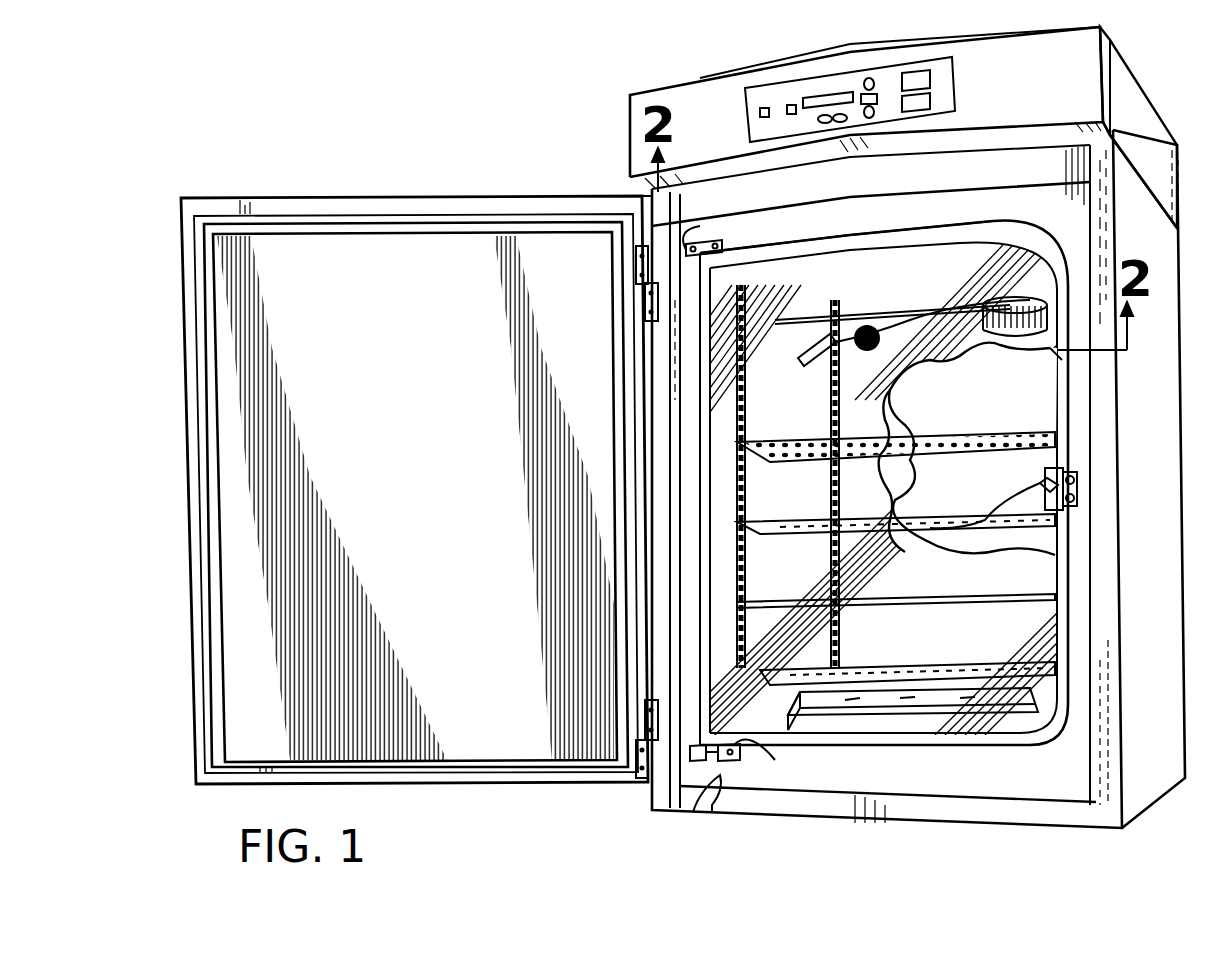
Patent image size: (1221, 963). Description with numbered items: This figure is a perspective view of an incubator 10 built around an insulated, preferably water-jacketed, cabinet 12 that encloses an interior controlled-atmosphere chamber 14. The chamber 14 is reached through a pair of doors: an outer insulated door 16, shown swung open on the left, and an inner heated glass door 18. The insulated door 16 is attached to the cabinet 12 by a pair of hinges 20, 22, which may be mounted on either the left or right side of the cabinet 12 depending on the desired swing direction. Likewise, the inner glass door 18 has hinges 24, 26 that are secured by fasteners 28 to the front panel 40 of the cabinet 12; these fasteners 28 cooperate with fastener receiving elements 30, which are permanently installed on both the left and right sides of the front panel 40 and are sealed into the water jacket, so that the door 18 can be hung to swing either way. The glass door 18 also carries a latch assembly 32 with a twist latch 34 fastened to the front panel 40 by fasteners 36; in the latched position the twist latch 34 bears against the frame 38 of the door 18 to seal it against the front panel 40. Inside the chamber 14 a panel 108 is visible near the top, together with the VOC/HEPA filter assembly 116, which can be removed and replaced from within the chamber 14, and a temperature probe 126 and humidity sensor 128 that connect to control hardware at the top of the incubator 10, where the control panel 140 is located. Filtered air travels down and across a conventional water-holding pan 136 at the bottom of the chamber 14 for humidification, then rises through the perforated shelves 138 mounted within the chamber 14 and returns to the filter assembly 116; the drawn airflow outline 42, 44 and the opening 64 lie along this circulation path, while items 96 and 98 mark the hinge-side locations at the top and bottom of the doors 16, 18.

The incubator 10 is at (502, 120).
The cabinet 12 is at (1160, 385).
The controlled-atmosphere chamber 14 is at (990, 402).
The outer insulated door 16 is at (330, 184).
The inner heated glass door 18 is at (1082, 584).
The hinge 20 is at (636, 266).
The hinge 22 is at (645, 718).
The hinge 24 is at (712, 240).
The hinge 26 is at (708, 801).
The fasteners 28 is at (725, 254).
The fastener receiving elements 30 is at (1052, 200).
The latch assembly 32 is at (1070, 482).
The twist latch 34 is at (1050, 521).
The fasteners 36 is at (1078, 482).
The frame 38 is at (1068, 671).
The front panel 40 is at (886, 214).
The air flow stream 42 is at (906, 402).
The air flow stream 44 is at (939, 388).
The air outlet 64 is at (1047, 403).
The upper hinge pin 96 is at (654, 243).
The lower hinge pin 98 is at (657, 782).
The panel 108 is at (852, 316).
The VOC/HEPA filter assembly 116 is at (1003, 305).
The temperature probe 126 is at (820, 345).
The humidity sensor 128 is at (818, 352).
The pan 136 is at (886, 718).
The shelves 138 is at (987, 474).
The control panel 140 is at (748, 71).